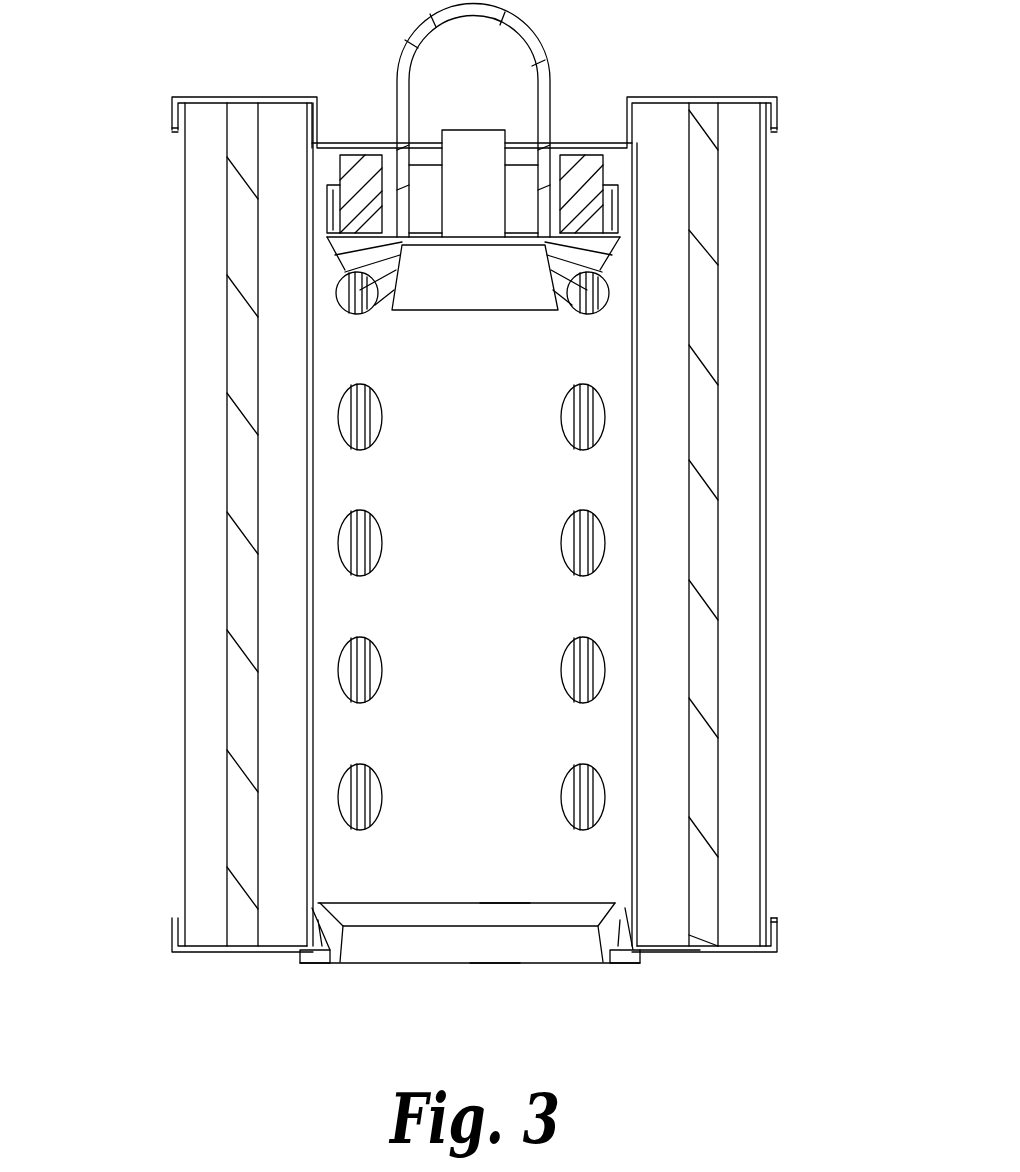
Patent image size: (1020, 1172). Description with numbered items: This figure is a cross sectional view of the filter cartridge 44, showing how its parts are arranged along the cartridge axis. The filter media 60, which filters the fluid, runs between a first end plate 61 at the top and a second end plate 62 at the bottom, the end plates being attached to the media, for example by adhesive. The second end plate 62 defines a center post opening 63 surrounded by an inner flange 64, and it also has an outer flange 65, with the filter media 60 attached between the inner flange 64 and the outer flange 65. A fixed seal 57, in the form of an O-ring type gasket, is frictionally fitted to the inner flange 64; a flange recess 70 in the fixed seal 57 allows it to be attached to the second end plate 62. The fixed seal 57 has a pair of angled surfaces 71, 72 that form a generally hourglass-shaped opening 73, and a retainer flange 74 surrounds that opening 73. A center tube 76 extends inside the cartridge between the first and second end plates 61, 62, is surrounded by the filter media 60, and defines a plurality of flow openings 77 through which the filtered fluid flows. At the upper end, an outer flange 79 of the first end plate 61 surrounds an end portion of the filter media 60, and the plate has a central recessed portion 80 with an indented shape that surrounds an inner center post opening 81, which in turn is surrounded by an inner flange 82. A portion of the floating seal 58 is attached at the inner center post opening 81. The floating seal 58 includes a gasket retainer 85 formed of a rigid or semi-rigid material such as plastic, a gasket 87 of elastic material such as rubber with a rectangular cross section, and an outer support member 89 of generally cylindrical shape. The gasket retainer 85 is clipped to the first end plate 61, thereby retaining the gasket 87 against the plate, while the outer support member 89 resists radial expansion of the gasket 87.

The filter cartridge 44 is at (740, 97).
The fixed seal 57 is at (633, 965).
The floating seal 58 is at (622, 208).
The filter media 60 is at (745, 408).
The first end plate 61 is at (777, 118).
The second end plate 62 is at (777, 918).
The center post opening 63 is at (492, 958).
The inner flange 64 is at (325, 965).
The outer flange 65 is at (773, 952).
The flange recess 70 is at (310, 922).
The angled surface 71 is at (455, 915).
The angled surface 72 is at (440, 943).
The hourglass-shape opening 73 is at (504, 893).
The retainer flange 74 is at (305, 965).
The center tube 76 is at (545, 715).
The flow openings 77 is at (608, 548).
The outer flange 79 is at (172, 108).
The central recessed portion 80 is at (354, 108).
The inner center post opening 81 is at (515, 125).
The inner flange 82 is at (340, 160).
The gasket retainer 85 is at (600, 290).
The gasket 87 is at (632, 246).
The outer support member 89 is at (327, 215).